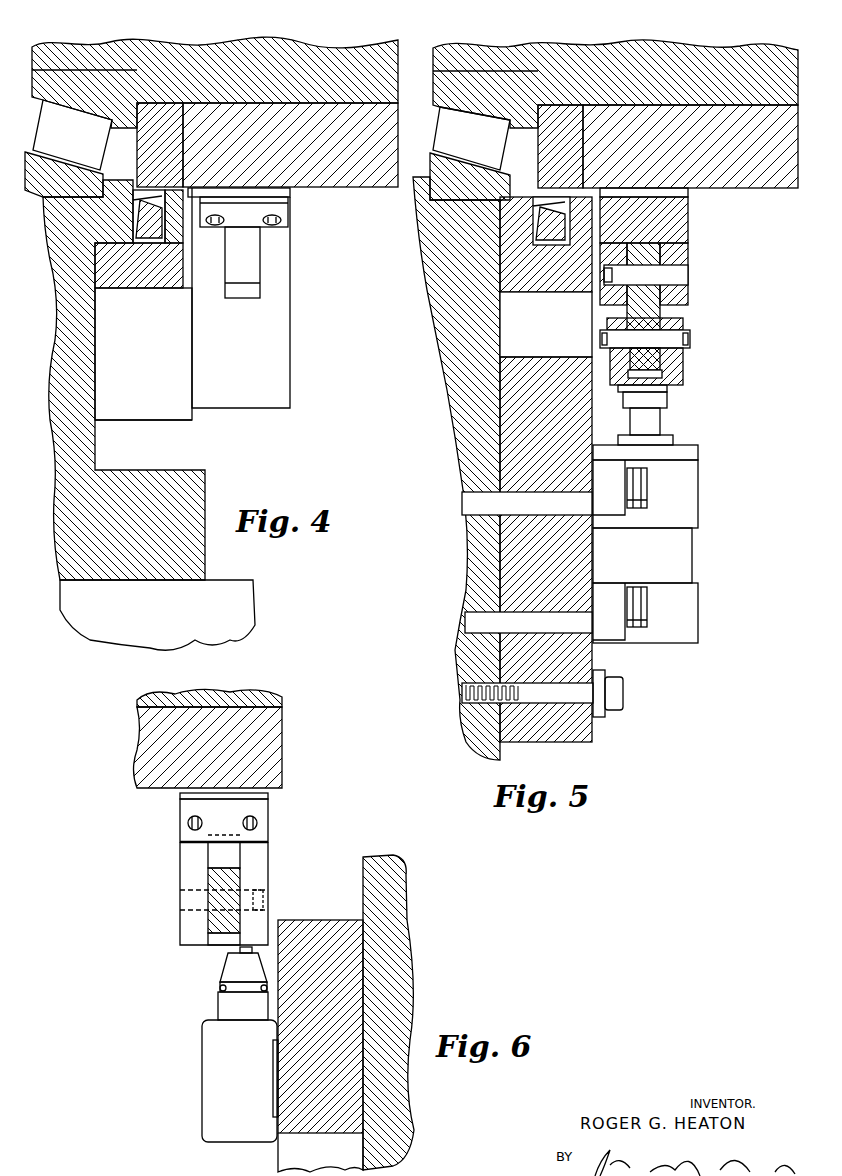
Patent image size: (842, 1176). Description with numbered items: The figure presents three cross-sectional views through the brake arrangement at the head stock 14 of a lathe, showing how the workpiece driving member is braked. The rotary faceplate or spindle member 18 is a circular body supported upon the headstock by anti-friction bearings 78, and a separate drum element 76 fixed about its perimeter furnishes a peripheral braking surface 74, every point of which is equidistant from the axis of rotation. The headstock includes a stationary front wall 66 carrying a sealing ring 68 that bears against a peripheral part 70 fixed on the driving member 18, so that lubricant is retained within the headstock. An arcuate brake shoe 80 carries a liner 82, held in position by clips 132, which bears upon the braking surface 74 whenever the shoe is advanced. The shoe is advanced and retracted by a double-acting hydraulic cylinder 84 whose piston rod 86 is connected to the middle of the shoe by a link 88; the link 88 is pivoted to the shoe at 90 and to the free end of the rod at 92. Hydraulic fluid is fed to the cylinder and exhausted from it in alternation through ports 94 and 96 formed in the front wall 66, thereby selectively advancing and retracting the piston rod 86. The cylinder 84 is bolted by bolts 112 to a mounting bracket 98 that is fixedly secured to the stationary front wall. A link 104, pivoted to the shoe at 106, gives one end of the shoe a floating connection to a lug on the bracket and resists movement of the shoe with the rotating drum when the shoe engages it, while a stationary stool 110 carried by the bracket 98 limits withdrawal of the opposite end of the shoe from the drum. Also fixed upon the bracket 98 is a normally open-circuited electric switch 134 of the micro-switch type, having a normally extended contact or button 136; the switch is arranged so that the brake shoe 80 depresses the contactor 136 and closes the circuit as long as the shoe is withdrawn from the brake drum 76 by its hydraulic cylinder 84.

In FIG. 6, the head stock 14 is at (400, 882).
In FIG. 4, the rotary faceplate or spindle member 18 is at (360, 58).
In FIG. 5, the rotary faceplate or spindle member 18 is at (474, 46).
In FIG. 6, the rotary faceplate or spindle member 18 is at (170, 695).
In FIG. 4, the stationary front wall 66 is at (131, 284).
In FIG. 5, the stationary front wall 66 is at (539, 288).
In FIG. 4, the sealing ring 68 is at (168, 230).
In FIG. 5, the sealing ring 68 is at (533, 231).
In FIG. 4, the peripheral part 70 is at (160, 113).
In FIG. 5, the peripheral part 70 is at (565, 118).
In FIG. 4, the braking surface 74 is at (292, 194).
In FIG. 5, the braking surface 74 is at (694, 192).
In FIG. 6, the braking surface 74 is at (178, 797).
In FIG. 4, the drum element 76 is at (362, 185).
In FIG. 5, the drum element 76 is at (762, 183).
In FIG. 6, the drum element 76 is at (140, 750).
In FIG. 4, the anti-friction bearings 78 is at (73, 117).
In FIG. 5, the anti-friction bearings 78 is at (488, 125).
In FIG. 5, the brake shoe 80 is at (690, 256).
In FIG. 6, the brake shoe 80 is at (187, 857).
In FIG. 5, the liner 82 is at (673, 205).
In FIG. 6, the liner 82 is at (268, 795).
In FIG. 5, the double-acting hydraulic cylinder 84 is at (685, 567).
In FIG. 5, the piston rod 86 is at (653, 418).
In FIG. 5, the link 88 is at (650, 316).
In FIG. 5, the pivot 90 is at (677, 276).
In FIG. 5, the pivot 92 is at (690, 339).
In FIG. 5, the port 94 is at (472, 505).
In FIG. 5, the port 96 is at (472, 622).
In FIG. 4, the mounting bracket 98 is at (184, 416).
In FIG. 6, the mounting bracket 98 is at (323, 922).
In FIG. 6, the link 104 is at (242, 881).
In FIG. 6, the pivot 106 is at (192, 888).
In FIG. 4, the stationary stool 110 is at (292, 272).
In FIG. 5, the bolts 112 is at (640, 490).
In FIG. 4, the clips 132 is at (282, 210).
In FIG. 6, the clips 132 is at (263, 832).
In FIG. 6, the electric switch 134 is at (210, 1057).
In FIG. 6, the contact or button 136 is at (237, 950).